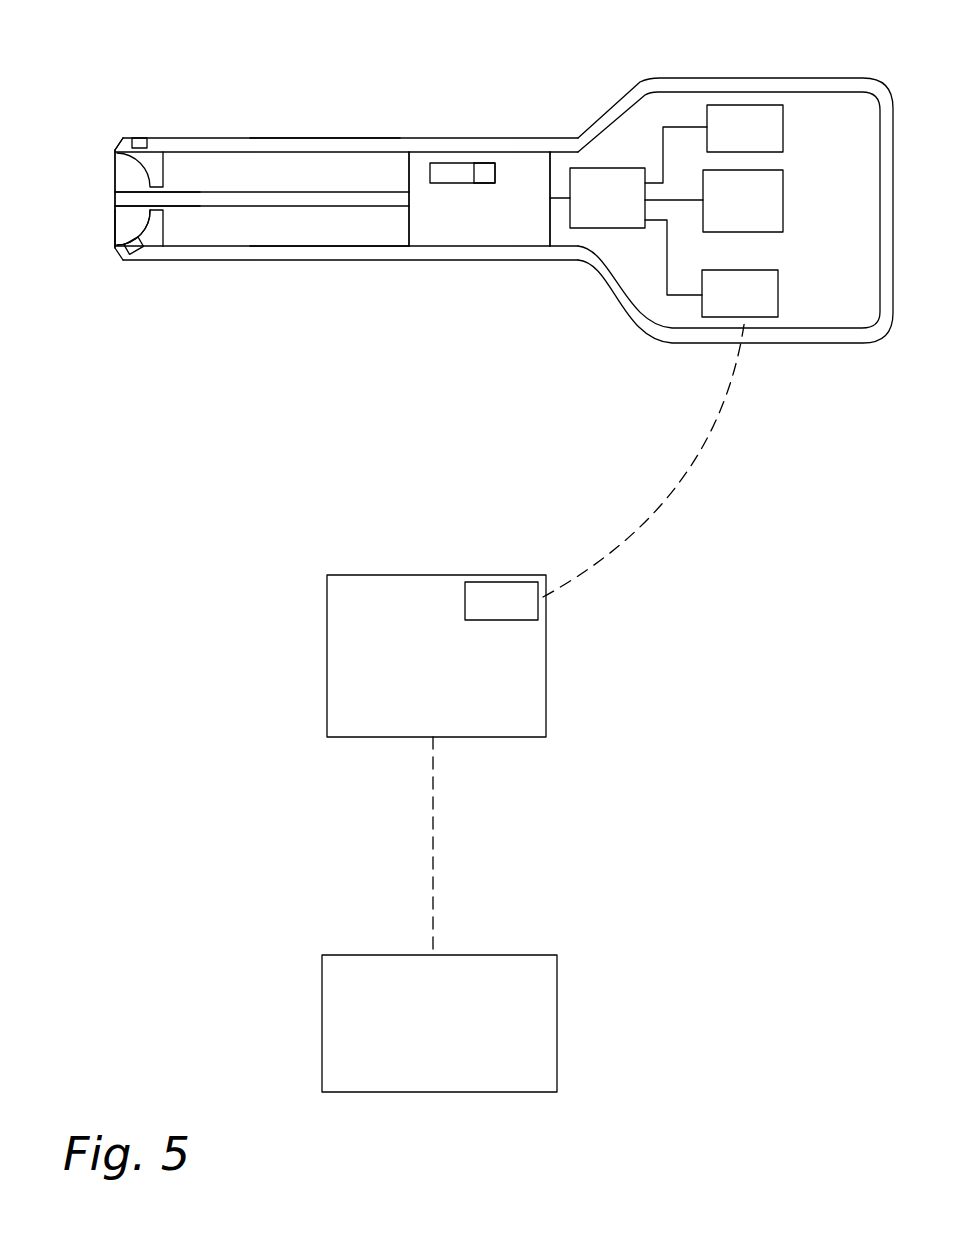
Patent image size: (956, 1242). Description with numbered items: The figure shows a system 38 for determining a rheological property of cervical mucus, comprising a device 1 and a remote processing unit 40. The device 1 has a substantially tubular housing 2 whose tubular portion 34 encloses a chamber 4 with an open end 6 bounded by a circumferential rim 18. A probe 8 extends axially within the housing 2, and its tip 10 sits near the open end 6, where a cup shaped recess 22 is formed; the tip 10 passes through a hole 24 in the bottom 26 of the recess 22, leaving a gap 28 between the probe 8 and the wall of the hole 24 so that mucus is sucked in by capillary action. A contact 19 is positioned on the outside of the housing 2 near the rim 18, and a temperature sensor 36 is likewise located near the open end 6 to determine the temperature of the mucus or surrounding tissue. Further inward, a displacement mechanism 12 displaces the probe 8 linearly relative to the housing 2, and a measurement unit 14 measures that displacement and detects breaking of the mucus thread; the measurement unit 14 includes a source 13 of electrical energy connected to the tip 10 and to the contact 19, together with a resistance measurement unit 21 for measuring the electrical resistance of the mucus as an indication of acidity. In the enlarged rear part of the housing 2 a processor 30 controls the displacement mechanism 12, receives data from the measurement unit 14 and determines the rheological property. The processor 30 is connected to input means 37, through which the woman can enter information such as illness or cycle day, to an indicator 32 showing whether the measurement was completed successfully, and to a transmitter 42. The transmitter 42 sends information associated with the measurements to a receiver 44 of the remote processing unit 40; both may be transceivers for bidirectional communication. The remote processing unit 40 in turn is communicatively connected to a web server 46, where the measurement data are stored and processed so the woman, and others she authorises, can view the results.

The device 1 is at (802, 70).
The housing 2 is at (370, 255).
The chamber 4 is at (312, 227).
The open end 6 is at (96, 177).
The probe 8 is at (250, 198).
The tip 10 is at (120, 199).
The displacement mechanism 12 is at (465, 233).
The measurement unit 14 is at (479, 199).
The source of electrical energy 13 is at (445, 172).
The circumferential rim 18 is at (115, 149).
The contact 19 is at (138, 137).
The resistance measurement unit 21 is at (482, 170).
The cup shaped recess 22 is at (125, 225).
The hole 24 is at (172, 186).
The bottom 26 is at (148, 217).
The gap 28 is at (175, 212).
The processor 30 is at (603, 218).
The indicator 32 is at (741, 172).
The tubular portion 34 is at (298, 136).
The temperature sensor 36 is at (132, 252).
The input means 37 is at (717, 108).
The system 38 is at (185, 547).
The remote processing unit 40 is at (518, 733).
The transmitter 42 is at (767, 310).
The receiver 44 is at (518, 617).
The web server 46 is at (536, 1089).